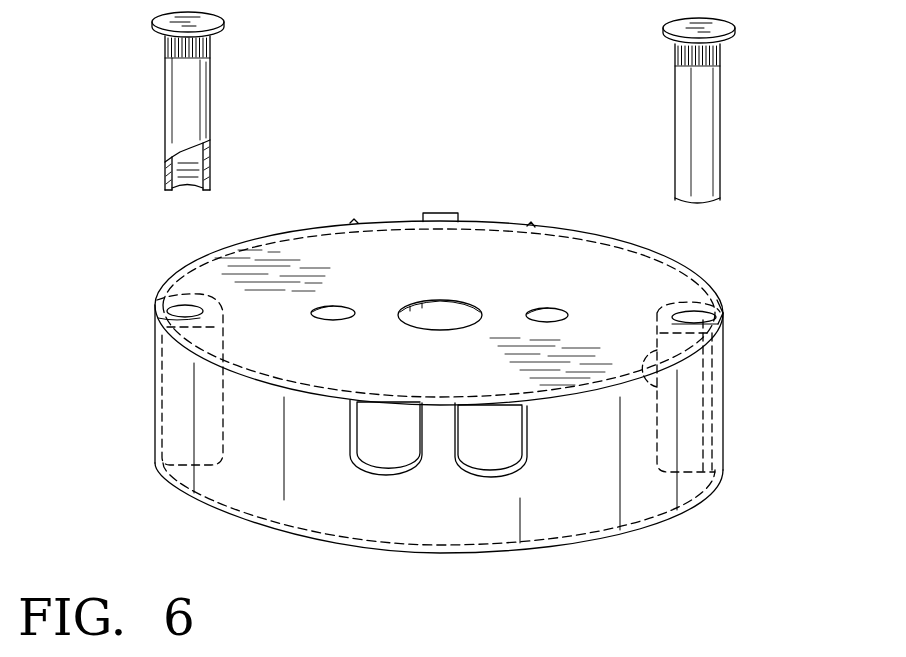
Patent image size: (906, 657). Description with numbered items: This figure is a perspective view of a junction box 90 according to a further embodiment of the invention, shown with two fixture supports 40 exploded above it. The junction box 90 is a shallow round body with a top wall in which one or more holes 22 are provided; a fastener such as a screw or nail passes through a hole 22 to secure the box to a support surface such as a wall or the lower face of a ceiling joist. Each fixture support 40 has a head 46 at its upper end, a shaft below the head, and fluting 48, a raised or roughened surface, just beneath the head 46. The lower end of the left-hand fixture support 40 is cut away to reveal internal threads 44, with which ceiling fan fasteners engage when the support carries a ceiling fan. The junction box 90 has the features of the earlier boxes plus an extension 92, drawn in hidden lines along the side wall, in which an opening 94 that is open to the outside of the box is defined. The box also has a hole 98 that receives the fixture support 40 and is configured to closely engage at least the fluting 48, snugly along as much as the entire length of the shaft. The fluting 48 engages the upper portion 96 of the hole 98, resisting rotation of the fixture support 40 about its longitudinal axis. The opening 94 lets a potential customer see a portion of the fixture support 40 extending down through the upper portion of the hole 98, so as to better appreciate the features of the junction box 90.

The hole 22 is at (327, 312).
The fixture support 40 is at (212, 82).
The internal threads 44 is at (193, 190).
The head 46 is at (730, 24).
The fluting 48 is at (678, 58).
The junction box 90 is at (797, 281).
The extension 92 is at (705, 392).
The opening 94 is at (724, 317).
The upper portion 96 is at (690, 311).
The hole 98 is at (180, 312).